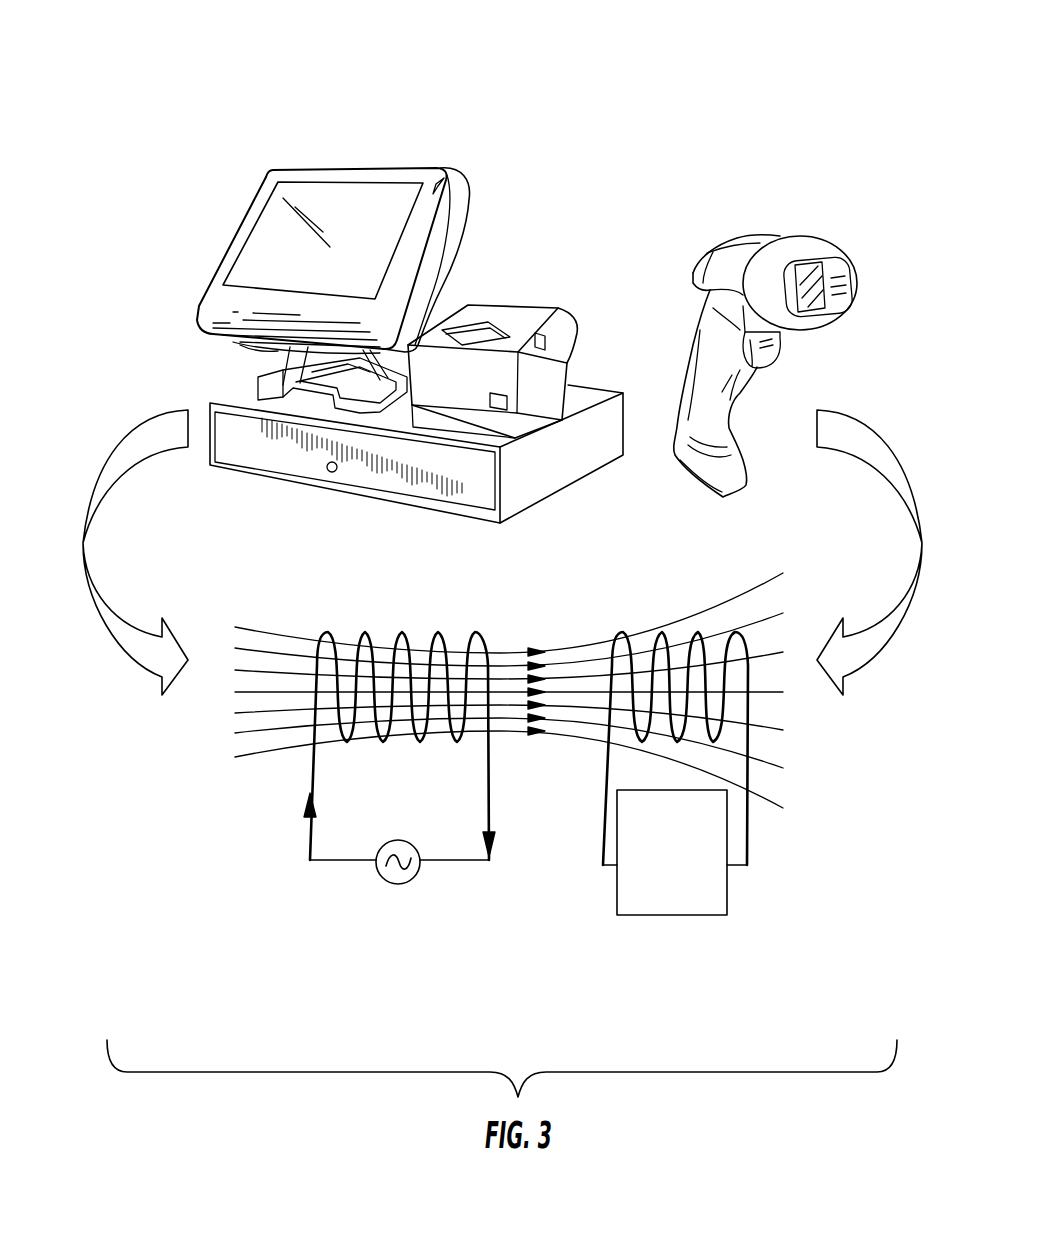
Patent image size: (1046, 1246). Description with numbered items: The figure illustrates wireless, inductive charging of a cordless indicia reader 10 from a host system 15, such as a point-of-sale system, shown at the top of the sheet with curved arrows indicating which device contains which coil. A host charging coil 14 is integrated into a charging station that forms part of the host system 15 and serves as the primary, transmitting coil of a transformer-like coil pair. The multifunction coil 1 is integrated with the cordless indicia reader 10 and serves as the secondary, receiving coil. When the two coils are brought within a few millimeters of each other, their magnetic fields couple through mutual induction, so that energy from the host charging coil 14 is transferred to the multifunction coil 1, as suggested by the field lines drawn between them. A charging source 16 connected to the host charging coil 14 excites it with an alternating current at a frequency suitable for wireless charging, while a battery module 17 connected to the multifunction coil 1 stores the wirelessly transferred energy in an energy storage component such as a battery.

The host system 15 is at (376, 122).
The cordless indicia reader 10 is at (753, 214).
The host charging coil 14 is at (401, 614).
The multifunction coil 1 is at (686, 616).
The charging source 16 is at (386, 910).
The battery module 17 is at (693, 928).